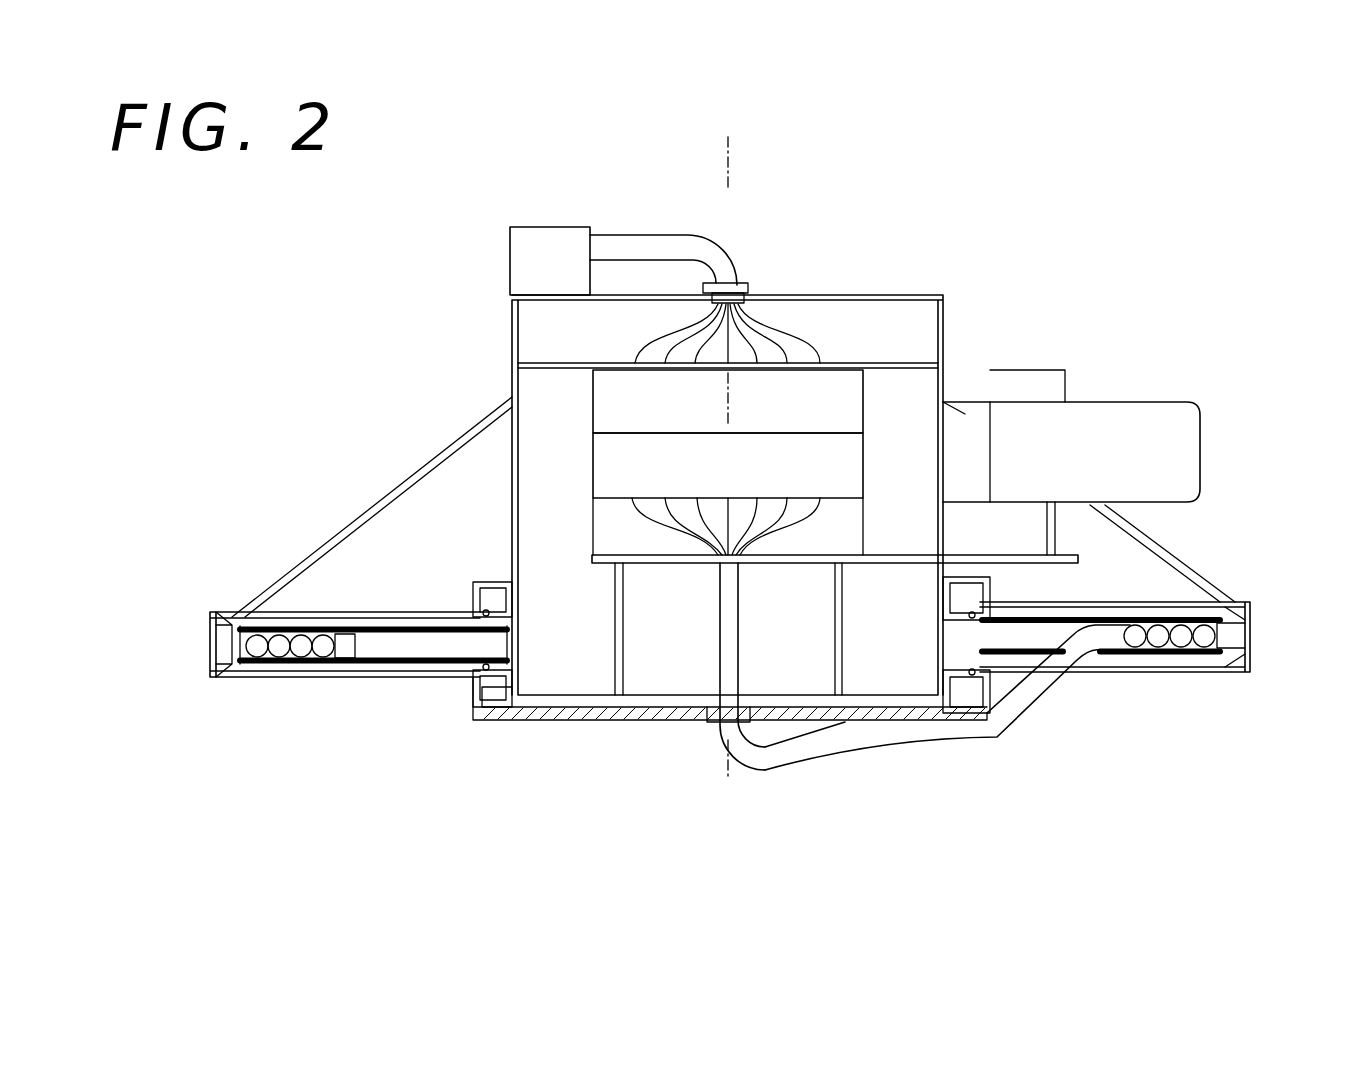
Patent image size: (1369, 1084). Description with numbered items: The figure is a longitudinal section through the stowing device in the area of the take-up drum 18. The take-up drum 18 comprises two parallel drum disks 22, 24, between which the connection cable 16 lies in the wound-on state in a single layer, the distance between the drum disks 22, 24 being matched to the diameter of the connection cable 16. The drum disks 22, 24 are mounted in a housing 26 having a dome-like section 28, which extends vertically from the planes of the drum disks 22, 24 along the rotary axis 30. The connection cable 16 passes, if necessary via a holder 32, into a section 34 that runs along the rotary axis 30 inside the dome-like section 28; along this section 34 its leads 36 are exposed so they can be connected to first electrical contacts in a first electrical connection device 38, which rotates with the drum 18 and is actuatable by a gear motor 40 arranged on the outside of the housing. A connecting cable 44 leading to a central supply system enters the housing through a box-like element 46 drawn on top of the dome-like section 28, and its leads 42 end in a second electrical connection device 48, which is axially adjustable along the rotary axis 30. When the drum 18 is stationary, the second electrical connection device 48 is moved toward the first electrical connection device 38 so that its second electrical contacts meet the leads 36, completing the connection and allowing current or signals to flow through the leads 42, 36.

The connection cable 16 is at (300, 647).
The take-up drum 18 is at (178, 608).
The drum disk 22 is at (262, 620).
The drum disk 24 is at (273, 660).
The housing 26 is at (1240, 672).
The dome-like section 28 is at (947, 333).
The rotary axis 30 is at (728, 163).
The holder 32 is at (853, 733).
The section 34 is at (726, 600).
The leads 36 is at (667, 540).
The first electrical connection device 38 is at (830, 477).
The gear motor 40 is at (1122, 470).
The leads 42 is at (787, 332).
The connecting cable 44 is at (648, 237).
The junction box 46 is at (552, 254).
The second electrical connection device 48 is at (820, 408).